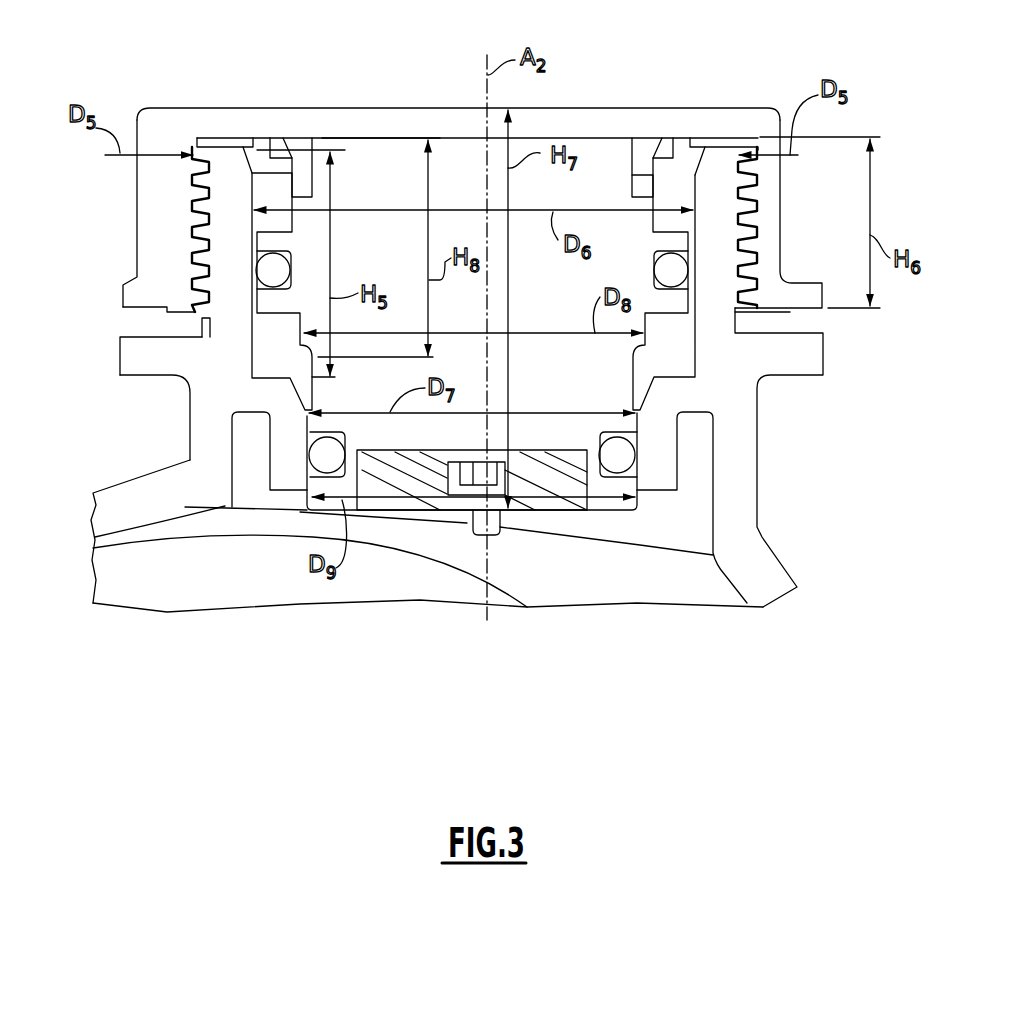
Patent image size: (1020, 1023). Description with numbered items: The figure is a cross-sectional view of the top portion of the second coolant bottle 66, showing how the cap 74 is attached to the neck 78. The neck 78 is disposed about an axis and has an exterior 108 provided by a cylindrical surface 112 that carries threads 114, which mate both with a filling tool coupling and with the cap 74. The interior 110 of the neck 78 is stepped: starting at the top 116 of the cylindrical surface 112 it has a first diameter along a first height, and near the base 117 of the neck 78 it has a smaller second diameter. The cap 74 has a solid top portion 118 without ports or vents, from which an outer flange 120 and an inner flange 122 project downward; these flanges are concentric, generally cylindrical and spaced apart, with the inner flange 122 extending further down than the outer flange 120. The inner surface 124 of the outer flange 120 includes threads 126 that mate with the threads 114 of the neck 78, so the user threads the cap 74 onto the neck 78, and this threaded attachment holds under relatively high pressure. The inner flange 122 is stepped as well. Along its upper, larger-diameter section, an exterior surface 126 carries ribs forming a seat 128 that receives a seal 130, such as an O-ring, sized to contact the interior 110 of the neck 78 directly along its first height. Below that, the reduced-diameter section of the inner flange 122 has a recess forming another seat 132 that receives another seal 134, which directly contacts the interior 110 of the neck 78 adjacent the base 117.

The second coolant bottle 66 is at (66, 521).
The cap 74 is at (110, 188).
The neck 78 is at (88, 362).
The exterior 108 is at (196, 328).
The interior 110 is at (270, 360).
The cylindrical surface 112 is at (737, 324).
The threads 114 is at (743, 270).
The top 116 is at (221, 138).
The base 117 is at (635, 393).
The top portion 118 is at (602, 108).
The outer flange 120 is at (770, 223).
The inner flange 122 is at (565, 322).
The inner surface 124 is at (751, 140).
The threads 126 is at (293, 228).
The seat 128 is at (267, 300).
The seal 130 is at (280, 270).
The seat 132 is at (633, 437).
The seal 134 is at (627, 455).